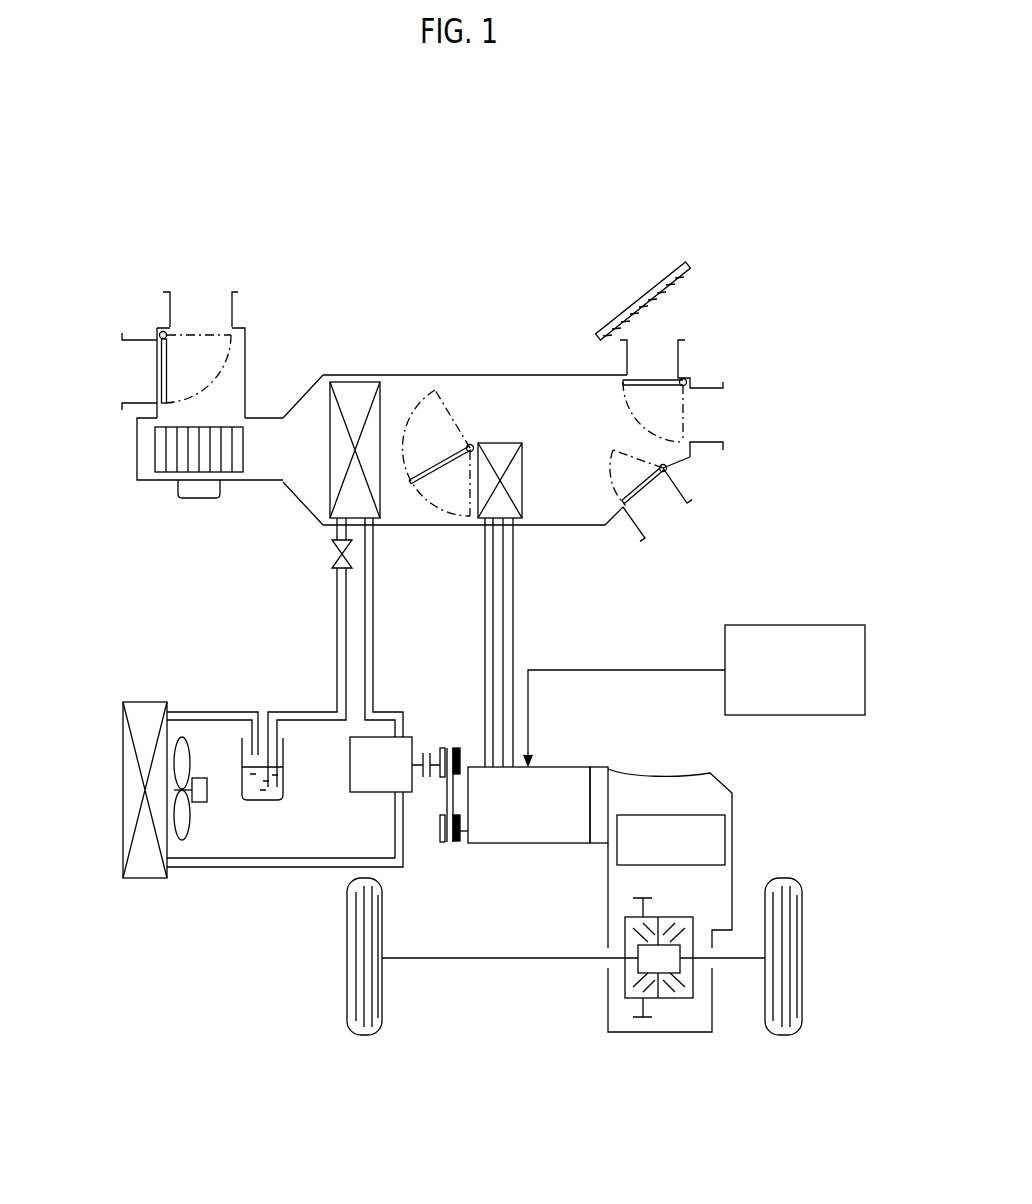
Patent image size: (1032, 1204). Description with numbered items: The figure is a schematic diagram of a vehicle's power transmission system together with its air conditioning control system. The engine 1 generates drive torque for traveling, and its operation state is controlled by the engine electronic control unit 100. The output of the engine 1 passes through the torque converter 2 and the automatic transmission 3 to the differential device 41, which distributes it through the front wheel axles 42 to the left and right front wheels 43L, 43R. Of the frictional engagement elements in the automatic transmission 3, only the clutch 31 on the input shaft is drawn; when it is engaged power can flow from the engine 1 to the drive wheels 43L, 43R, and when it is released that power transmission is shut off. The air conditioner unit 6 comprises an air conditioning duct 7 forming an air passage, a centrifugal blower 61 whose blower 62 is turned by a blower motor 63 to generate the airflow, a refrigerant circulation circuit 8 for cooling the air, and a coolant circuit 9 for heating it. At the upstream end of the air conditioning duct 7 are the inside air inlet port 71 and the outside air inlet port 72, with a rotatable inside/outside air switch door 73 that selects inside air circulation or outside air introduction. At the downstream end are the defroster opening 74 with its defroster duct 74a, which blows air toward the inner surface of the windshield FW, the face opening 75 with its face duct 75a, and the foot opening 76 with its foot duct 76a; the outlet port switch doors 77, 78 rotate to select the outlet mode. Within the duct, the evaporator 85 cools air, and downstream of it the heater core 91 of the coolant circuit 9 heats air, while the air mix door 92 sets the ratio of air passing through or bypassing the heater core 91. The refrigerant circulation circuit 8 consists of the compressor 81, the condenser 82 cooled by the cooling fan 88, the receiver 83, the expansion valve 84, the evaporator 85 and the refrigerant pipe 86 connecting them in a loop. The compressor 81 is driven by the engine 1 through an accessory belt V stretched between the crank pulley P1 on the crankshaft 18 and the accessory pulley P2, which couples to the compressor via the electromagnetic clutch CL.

The engine 1 is at (560, 767).
The torque converter 2 is at (598, 767).
The automatic transmission 3 is at (667, 770).
The air conditioner unit 6 is at (500, 333).
The air conditioning duct 7 is at (448, 375).
The refrigerant circulation circuit 8 is at (233, 700).
The coolant circuit 9 is at (520, 617).
The crankshaft 18 is at (463, 843).
The clutch 31 is at (708, 806).
The differential device 41 is at (687, 908).
The front wheel axles 42 is at (533, 957).
The front wheel 43L is at (347, 972).
The front wheel 43R is at (803, 973).
The centrifugal blower 61 is at (158, 494).
The blower 62 is at (150, 453).
The blower motor 63 is at (199, 493).
The inside air inlet port 71 is at (133, 362).
The outside air inlet port 72 is at (200, 310).
The inside/outside air switch door 73 is at (158, 380).
The defroster opening 74 is at (653, 347).
The defroster duct 74a is at (620, 362).
The face opening 75 is at (708, 419).
The face duct 75a is at (707, 446).
The foot opening 76 is at (663, 514).
The foot duct 76a is at (682, 488).
The outlet port switch door 77 is at (657, 378).
The outlet port switch door 78 is at (635, 527).
The compressor 81 is at (350, 760).
The condenser 82 is at (143, 703).
The receiver 83 is at (242, 780).
The expansion valve 84 is at (332, 546).
The evaporator 85 is at (350, 382).
The refrigerant pipe 86 is at (337, 655).
The cooling fan 88 is at (182, 737).
The heater core 91 is at (524, 483).
The air mix door 92 is at (430, 485).
The engine electronic control unit 100 is at (822, 625).
The electromagnetic clutch CL is at (427, 753).
The crank pulley P1 is at (441, 845).
The accessory pulley P2 is at (456, 748).
The accessory belt V is at (443, 795).
The windshield FW is at (636, 303).